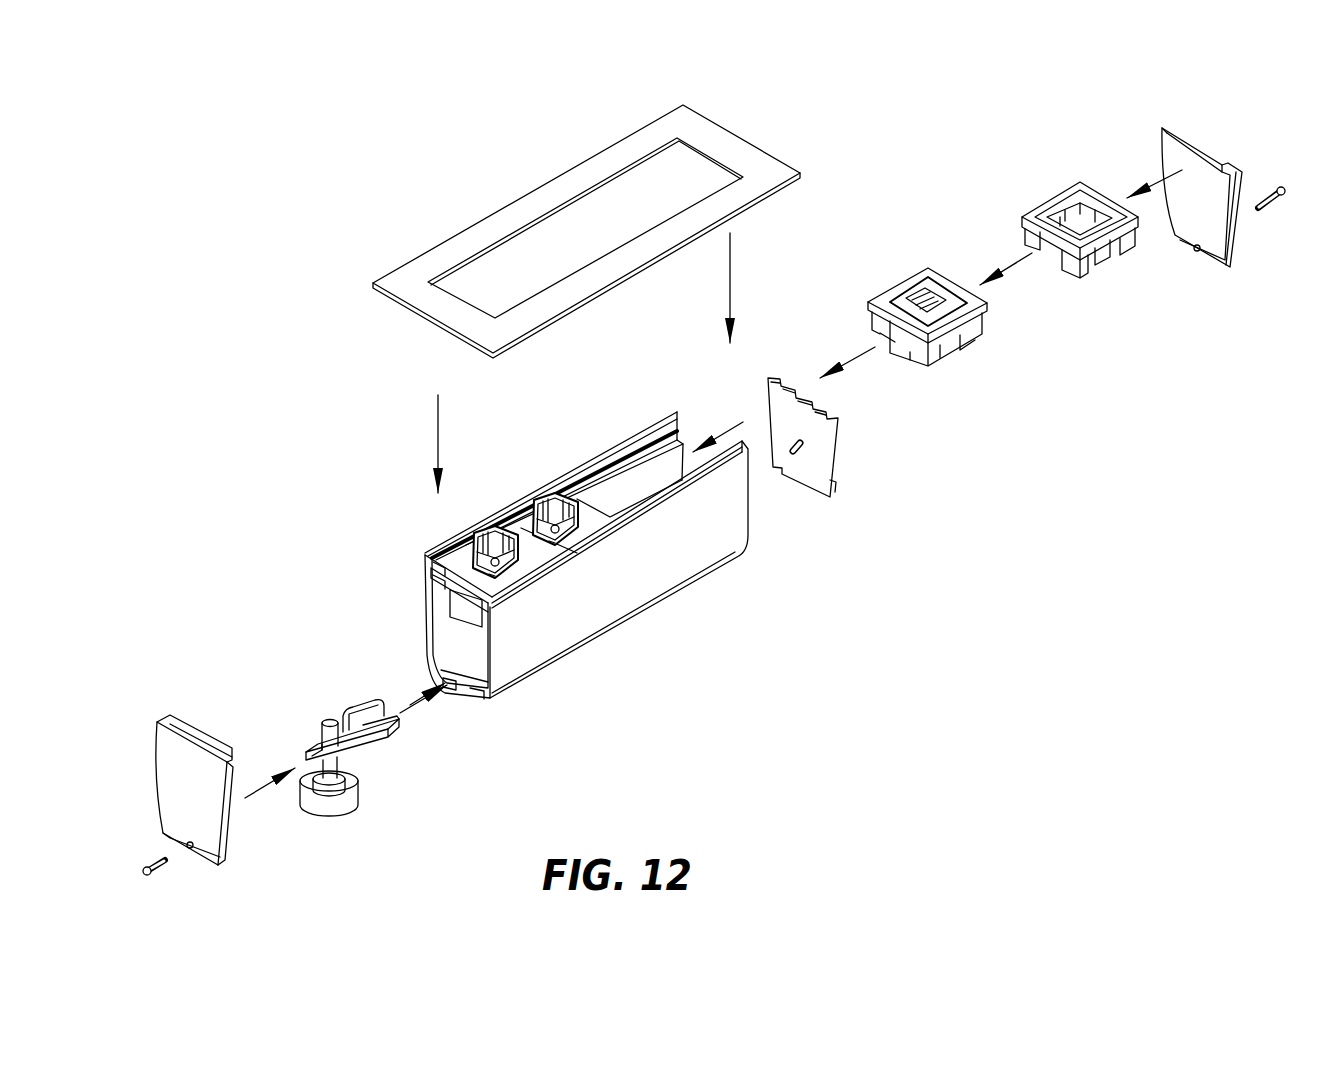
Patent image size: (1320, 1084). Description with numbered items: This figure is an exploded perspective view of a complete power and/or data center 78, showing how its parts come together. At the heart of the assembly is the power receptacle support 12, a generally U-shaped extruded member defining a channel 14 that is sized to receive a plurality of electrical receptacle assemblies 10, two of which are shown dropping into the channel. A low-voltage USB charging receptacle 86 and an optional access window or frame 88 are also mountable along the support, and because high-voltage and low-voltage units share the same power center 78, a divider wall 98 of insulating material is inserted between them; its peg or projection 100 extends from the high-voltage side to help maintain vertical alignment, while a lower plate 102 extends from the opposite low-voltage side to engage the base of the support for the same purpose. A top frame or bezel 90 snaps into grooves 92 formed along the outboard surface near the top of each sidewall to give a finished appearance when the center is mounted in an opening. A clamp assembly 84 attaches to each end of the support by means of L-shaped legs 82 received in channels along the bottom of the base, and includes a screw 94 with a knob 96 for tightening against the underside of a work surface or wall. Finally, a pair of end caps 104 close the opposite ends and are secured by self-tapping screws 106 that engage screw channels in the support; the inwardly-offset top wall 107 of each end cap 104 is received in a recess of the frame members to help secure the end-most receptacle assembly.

The electrical receptacle assembly 10 is at (479, 515).
The power receptacle support 12 is at (643, 587).
The channel 14 is at (696, 418).
The power and/or data center 78 is at (1014, 681).
The L-shaped legs 82 is at (390, 711).
The clamp assembly 84 is at (420, 770).
The low-voltage USB charging receptacle 86 is at (896, 263).
The access windows or frames 88 is at (1031, 179).
The top frame or bezel 90 is at (483, 224).
The grooves 92 is at (676, 506).
The screws 94 is at (324, 727).
The knobs 96 is at (322, 812).
The divider wall 98 is at (836, 447).
The peg or projection 100 is at (797, 454).
The lower plate 102 is at (838, 468).
The end caps 104 is at (669, 475).
The self-tapping screws 106 is at (1275, 212).
The inwardly-offset top wall 107 is at (1193, 141).